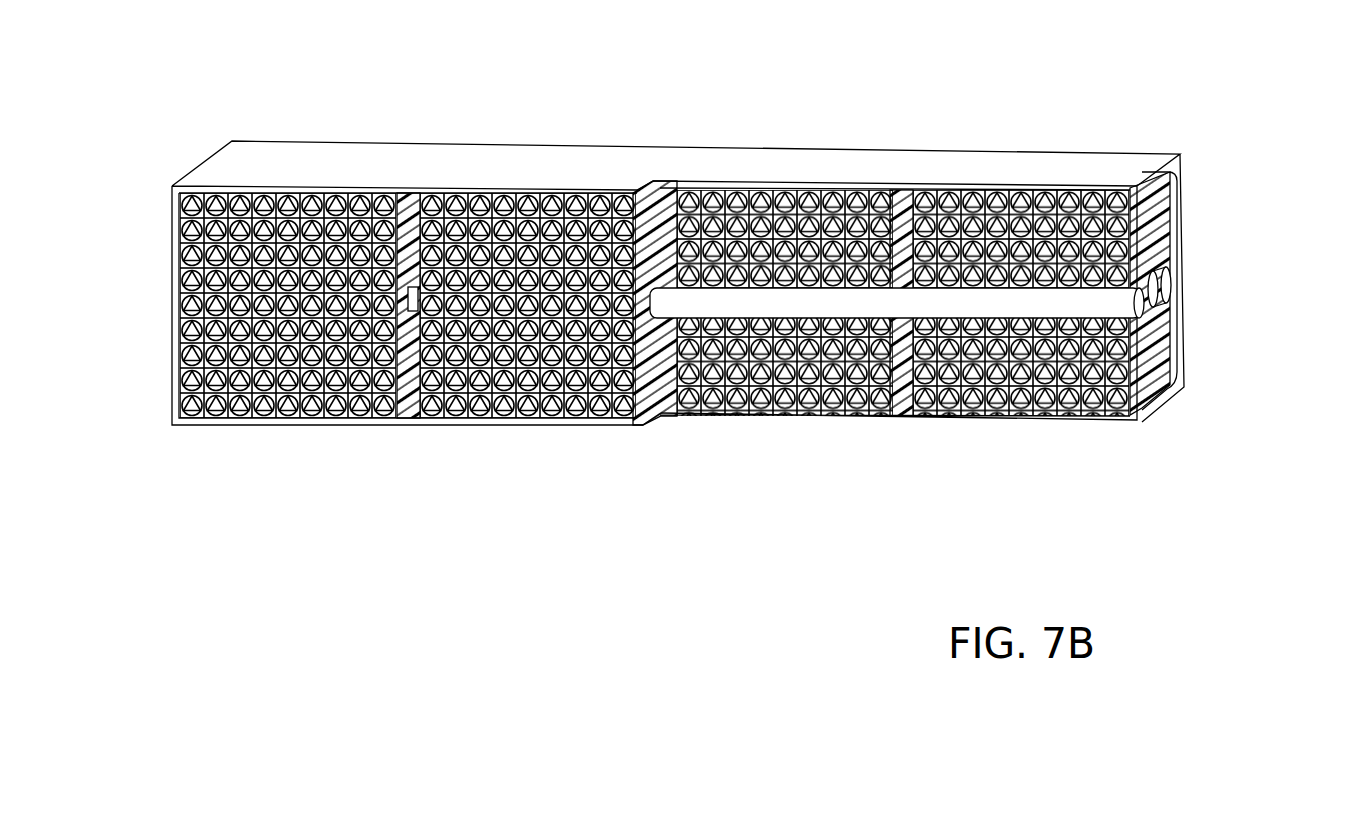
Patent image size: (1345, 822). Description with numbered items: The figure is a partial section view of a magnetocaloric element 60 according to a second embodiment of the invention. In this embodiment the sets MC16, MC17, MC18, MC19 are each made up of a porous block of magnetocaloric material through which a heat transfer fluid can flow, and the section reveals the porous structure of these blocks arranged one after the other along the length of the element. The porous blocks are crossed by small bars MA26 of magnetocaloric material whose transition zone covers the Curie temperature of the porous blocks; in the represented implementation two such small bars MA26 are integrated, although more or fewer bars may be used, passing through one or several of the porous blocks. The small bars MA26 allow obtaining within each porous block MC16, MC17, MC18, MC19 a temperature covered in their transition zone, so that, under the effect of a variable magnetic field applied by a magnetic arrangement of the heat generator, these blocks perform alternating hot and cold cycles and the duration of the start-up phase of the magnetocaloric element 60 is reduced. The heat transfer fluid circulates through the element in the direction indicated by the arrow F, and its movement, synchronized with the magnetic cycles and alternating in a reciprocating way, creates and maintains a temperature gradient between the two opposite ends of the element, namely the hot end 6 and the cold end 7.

The magnetocaloric element 60 is at (1156, 98).
The set of magnetocaloric material MC16 is at (351, 372).
The set of magnetocaloric material MC17 is at (531, 365).
The set of magnetocaloric material MC18 is at (797, 368).
The set of magnetocaloric material MC19 is at (1013, 365).
The small bar MA26 is at (1163, 302).
The hot end 6 is at (1165, 352).
The cold end 7 is at (154, 389).
The arrow F is at (120, 311).